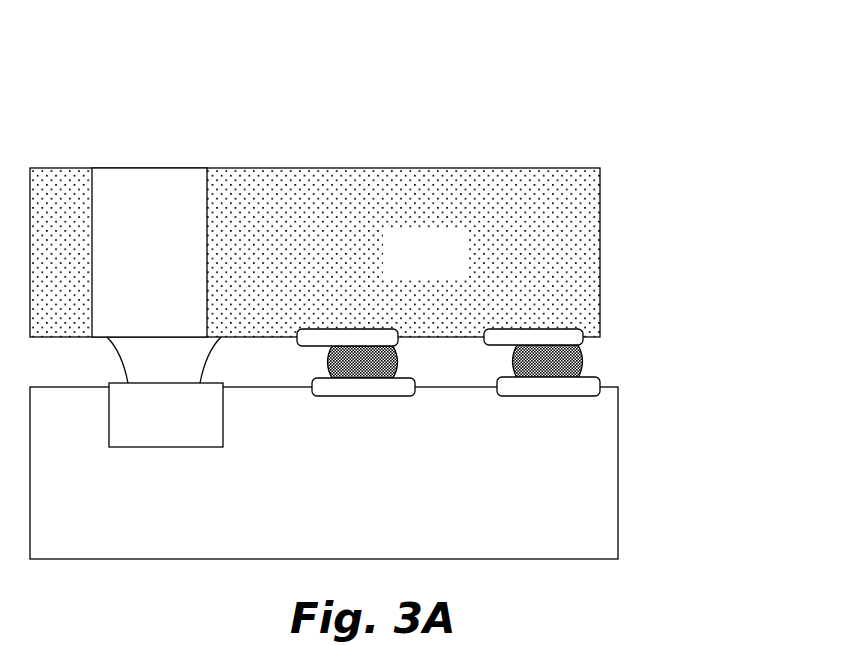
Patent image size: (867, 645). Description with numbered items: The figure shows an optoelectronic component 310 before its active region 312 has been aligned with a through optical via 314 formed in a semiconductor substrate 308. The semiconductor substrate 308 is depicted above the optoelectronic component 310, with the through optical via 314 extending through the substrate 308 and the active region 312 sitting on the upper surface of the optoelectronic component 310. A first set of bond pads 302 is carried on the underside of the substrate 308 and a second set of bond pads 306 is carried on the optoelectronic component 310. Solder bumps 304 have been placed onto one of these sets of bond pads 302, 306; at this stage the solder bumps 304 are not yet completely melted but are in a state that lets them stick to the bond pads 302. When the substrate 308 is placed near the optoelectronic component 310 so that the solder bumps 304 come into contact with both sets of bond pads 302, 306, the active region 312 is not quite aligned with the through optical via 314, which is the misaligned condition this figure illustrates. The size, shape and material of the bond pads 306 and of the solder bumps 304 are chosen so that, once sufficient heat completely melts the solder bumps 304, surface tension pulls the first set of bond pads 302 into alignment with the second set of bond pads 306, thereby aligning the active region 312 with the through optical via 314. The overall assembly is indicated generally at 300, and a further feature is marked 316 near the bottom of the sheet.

The semiconductor package assembly 300 is at (80, 116).
The first set of bond pads 302 is at (598, 336).
The solder bumps 304 is at (578, 356).
The second set of bond pads 306 is at (595, 389).
The semiconductor substrate 308 is at (442, 263).
The optoelectronic component 310 is at (474, 499).
The active region 312 is at (186, 426).
The through optical via 314 is at (167, 261).
The element 316 is at (23, 639).